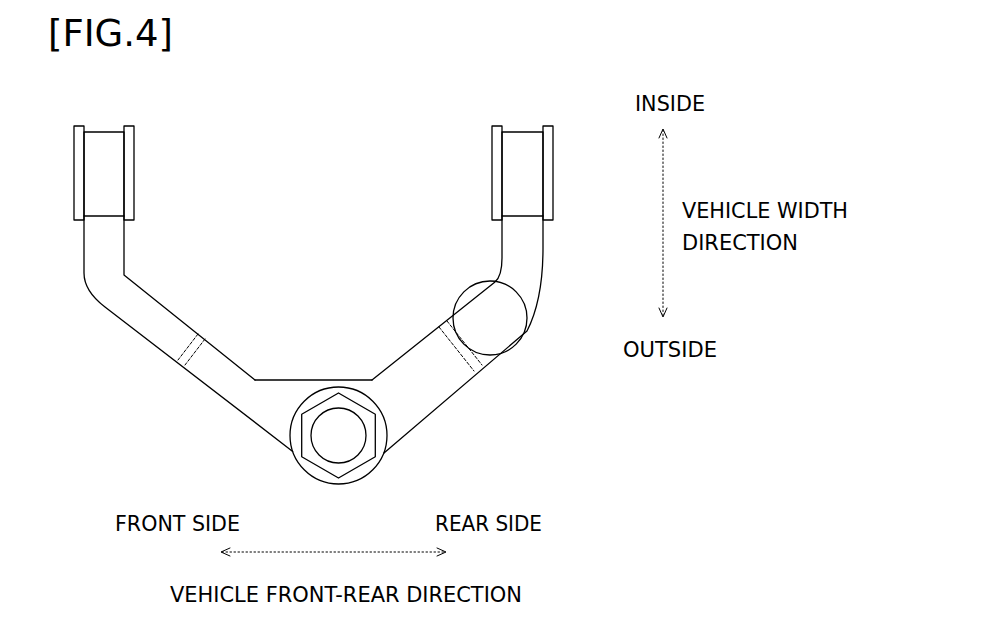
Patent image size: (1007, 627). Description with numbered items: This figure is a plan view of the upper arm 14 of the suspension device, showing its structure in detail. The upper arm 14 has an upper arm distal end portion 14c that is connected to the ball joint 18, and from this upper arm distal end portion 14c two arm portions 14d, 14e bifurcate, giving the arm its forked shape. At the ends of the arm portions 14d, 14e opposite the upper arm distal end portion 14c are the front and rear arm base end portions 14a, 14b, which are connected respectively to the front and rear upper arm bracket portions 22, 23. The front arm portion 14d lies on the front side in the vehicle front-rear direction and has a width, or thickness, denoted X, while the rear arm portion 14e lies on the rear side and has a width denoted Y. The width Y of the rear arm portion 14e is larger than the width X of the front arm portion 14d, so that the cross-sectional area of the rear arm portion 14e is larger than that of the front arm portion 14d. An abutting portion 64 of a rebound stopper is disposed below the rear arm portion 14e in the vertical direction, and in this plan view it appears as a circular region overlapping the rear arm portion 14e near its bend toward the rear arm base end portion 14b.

The upper arm 14 is at (319, 285).
The front arm base end portion 14a is at (106, 152).
The rear arm base end portion 14b is at (518, 152).
The upper arm distal end portion 14c is at (278, 425).
The front arm portion 14d is at (160, 335).
The rear arm portion 14e is at (437, 382).
The ball joint 18 is at (362, 467).
The front upper arm bracket portion 22 is at (134, 167).
The rear upper arm bracket portion 23 is at (553, 165).
The abutting portion 64 is at (515, 352).